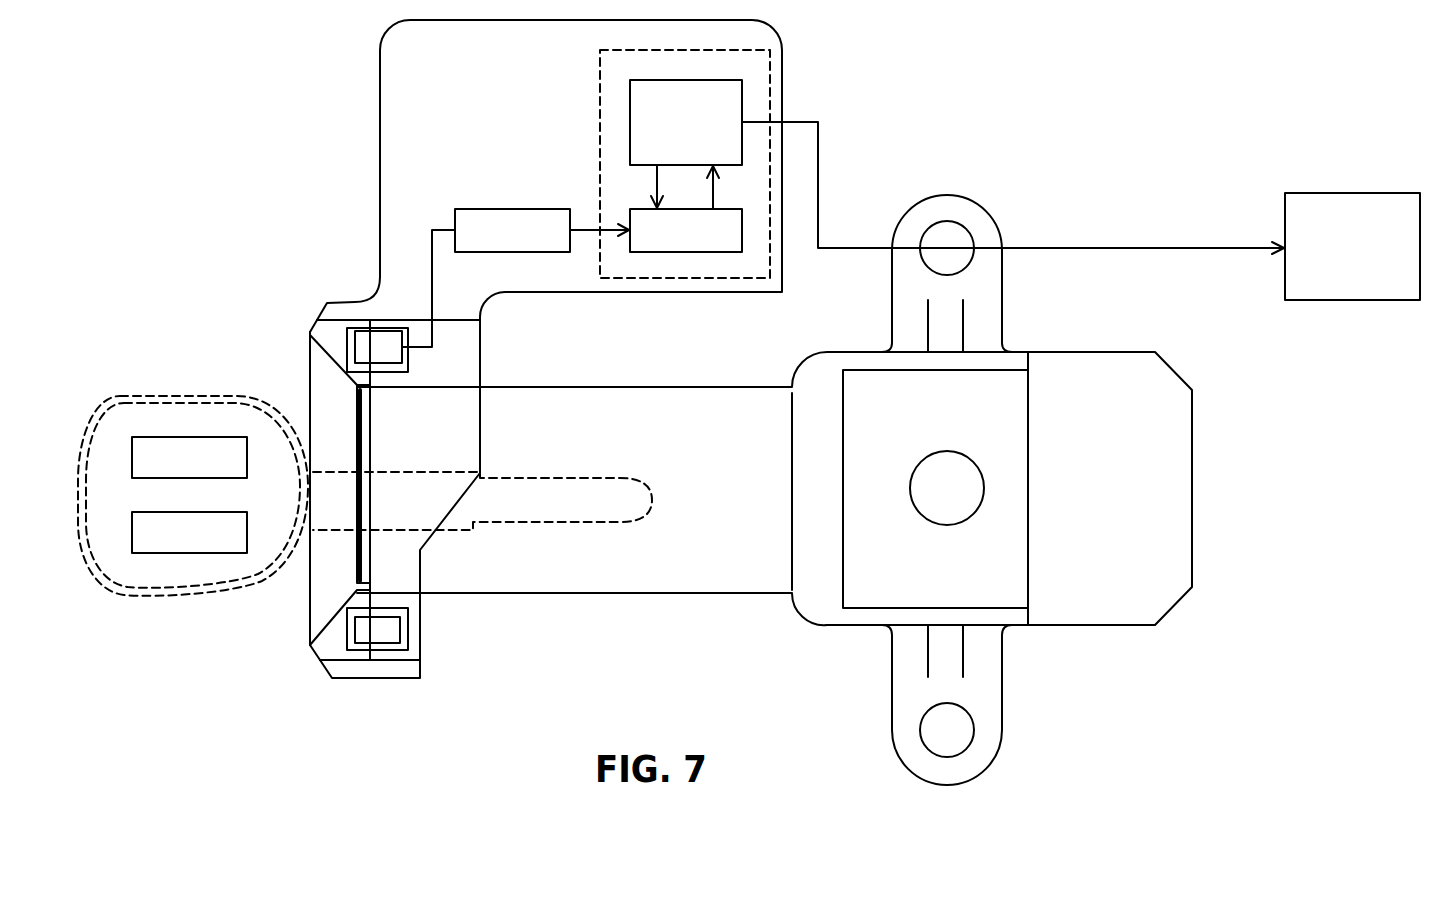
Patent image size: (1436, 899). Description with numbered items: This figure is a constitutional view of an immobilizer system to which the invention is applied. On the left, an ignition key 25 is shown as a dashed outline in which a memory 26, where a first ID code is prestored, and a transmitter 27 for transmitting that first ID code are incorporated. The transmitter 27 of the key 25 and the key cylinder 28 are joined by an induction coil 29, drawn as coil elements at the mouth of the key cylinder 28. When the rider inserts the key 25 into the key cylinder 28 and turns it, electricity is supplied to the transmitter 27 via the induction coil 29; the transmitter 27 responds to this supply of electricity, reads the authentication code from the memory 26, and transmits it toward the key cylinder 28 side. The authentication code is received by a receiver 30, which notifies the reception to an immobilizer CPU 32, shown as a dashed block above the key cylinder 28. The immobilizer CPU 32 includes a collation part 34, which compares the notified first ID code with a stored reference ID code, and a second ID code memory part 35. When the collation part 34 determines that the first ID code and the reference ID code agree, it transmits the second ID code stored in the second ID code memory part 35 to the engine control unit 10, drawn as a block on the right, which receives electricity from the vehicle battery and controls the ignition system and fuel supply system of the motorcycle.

The engine control unit (ECU) 10 is at (1380, 300).
The ignition key 25 is at (130, 397).
The memory 26 is at (183, 437).
The transmitter 27 is at (218, 553).
The key cylinder 28 is at (633, 582).
The induction coil 29 is at (408, 630).
The receiver 30 is at (540, 252).
The immobilizer CPU 32 is at (600, 120).
The collation part 34 is at (710, 252).
The second ID code memory part 35 is at (662, 80).